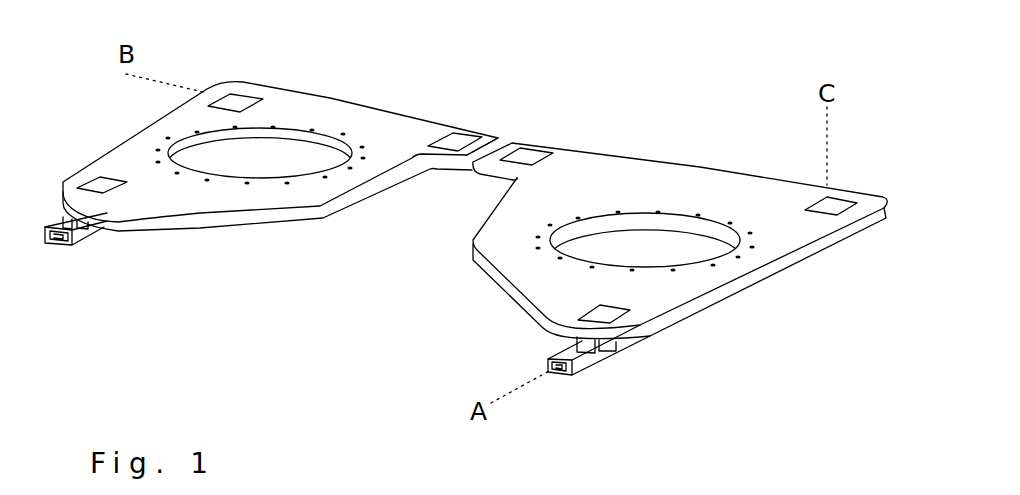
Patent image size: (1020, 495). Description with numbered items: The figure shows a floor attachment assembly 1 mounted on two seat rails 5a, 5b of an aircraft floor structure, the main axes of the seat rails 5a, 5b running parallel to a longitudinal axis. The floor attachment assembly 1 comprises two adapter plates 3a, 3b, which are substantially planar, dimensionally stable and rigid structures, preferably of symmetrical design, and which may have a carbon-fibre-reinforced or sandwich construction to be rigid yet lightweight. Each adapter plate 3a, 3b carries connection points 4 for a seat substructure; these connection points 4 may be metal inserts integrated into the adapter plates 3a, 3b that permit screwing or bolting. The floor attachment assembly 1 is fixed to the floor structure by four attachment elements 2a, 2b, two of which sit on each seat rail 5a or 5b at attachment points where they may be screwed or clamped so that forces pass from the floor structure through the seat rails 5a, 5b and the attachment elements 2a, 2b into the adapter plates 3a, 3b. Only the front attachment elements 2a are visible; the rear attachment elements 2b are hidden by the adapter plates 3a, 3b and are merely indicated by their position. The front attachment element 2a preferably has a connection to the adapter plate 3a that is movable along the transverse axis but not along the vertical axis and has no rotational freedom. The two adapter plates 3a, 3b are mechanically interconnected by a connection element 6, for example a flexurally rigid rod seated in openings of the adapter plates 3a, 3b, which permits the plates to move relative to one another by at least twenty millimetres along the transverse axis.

The floor attachment assembly 1 is at (466, 226).
The front attachment element 2a is at (102, 227).
The rear attachment element 2b is at (231, 101).
The adapter plate 3a is at (652, 306).
The adapter plate 3b is at (200, 200).
The connection points 4 is at (333, 126).
The seat rail 5a is at (583, 366).
The seat rail 5b is at (80, 239).
The connection element 6 is at (509, 138).